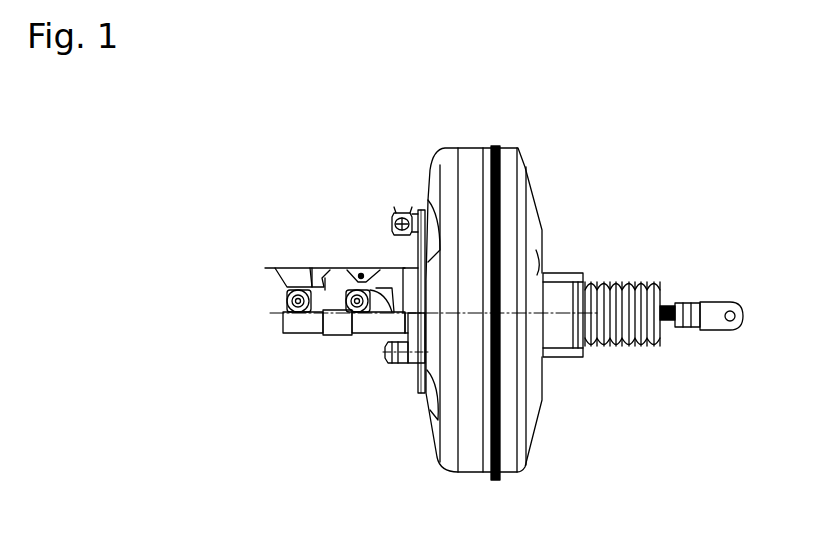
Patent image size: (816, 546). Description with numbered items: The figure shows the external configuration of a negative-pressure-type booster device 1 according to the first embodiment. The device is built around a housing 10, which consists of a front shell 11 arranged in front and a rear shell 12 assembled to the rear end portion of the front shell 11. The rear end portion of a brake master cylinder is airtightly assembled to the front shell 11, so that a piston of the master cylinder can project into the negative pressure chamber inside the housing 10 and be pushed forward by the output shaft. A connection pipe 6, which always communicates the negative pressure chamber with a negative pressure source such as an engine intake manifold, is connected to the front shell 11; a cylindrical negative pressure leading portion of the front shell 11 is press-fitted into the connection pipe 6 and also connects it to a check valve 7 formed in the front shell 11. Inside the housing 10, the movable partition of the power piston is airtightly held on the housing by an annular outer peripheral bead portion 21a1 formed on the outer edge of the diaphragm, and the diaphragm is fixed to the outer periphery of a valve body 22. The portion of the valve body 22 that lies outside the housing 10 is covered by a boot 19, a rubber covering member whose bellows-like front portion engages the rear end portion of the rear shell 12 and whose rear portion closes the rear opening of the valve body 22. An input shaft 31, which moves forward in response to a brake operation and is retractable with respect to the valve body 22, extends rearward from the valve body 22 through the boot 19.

The negative-pressure-type booster device 1 is at (302, 128).
The connection pipe 6 is at (393, 226).
The check valve 7 is at (425, 212).
The housing 10 is at (560, 110).
The front shell 11 is at (470, 152).
The rear shell 12 is at (515, 152).
The boot 19 is at (617, 280).
The outer peripheral bead portion 21a1 is at (490, 482).
The valve body 22 is at (593, 350).
The input shaft 31 is at (661, 322).